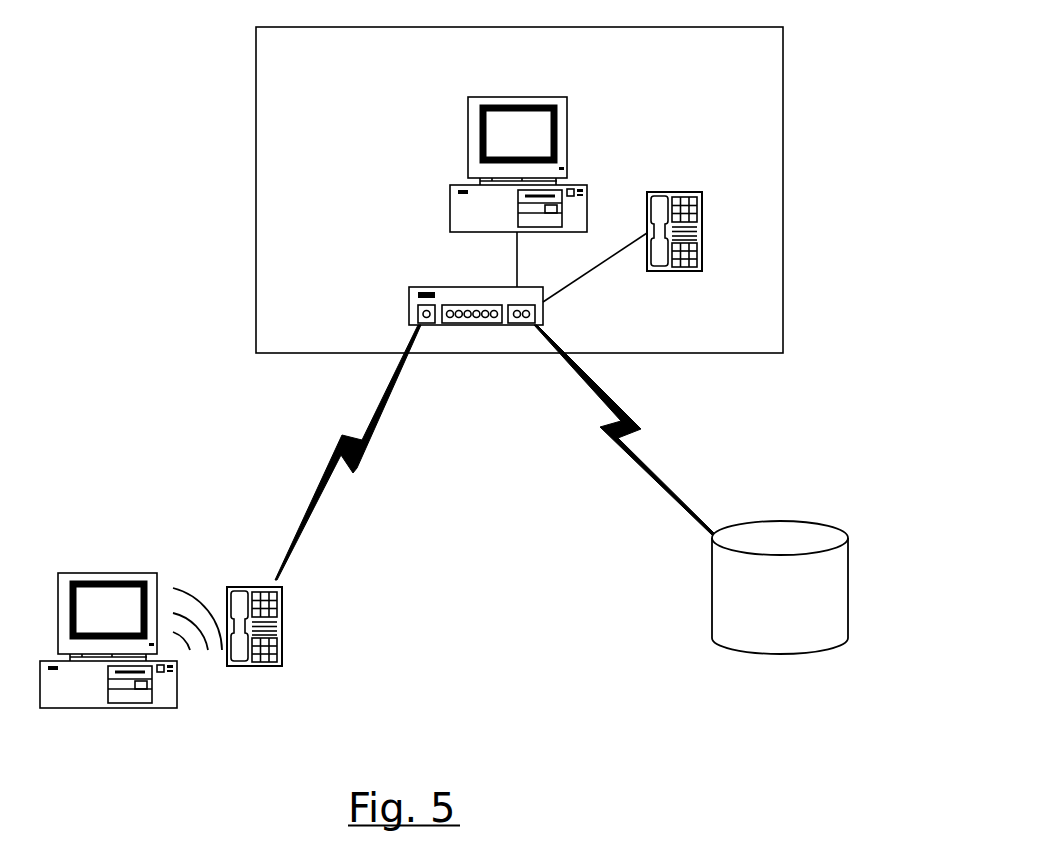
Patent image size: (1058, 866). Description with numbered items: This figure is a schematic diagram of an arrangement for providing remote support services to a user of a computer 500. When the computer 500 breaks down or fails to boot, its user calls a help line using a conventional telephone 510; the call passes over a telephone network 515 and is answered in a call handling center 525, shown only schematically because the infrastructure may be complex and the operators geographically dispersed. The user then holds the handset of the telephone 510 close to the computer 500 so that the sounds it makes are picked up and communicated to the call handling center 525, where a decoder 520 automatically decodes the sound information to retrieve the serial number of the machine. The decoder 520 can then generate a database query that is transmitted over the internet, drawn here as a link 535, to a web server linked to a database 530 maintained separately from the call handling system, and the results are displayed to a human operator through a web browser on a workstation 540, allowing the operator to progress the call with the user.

The computer 500 is at (75, 572).
The telephone 510 is at (285, 620).
The telephone network 515 is at (363, 437).
The decoder 520 is at (410, 286).
The call handling center 525 is at (749, 334).
The database 530 is at (848, 565).
The communication link 535 is at (625, 410).
The workstation 540 is at (572, 128).